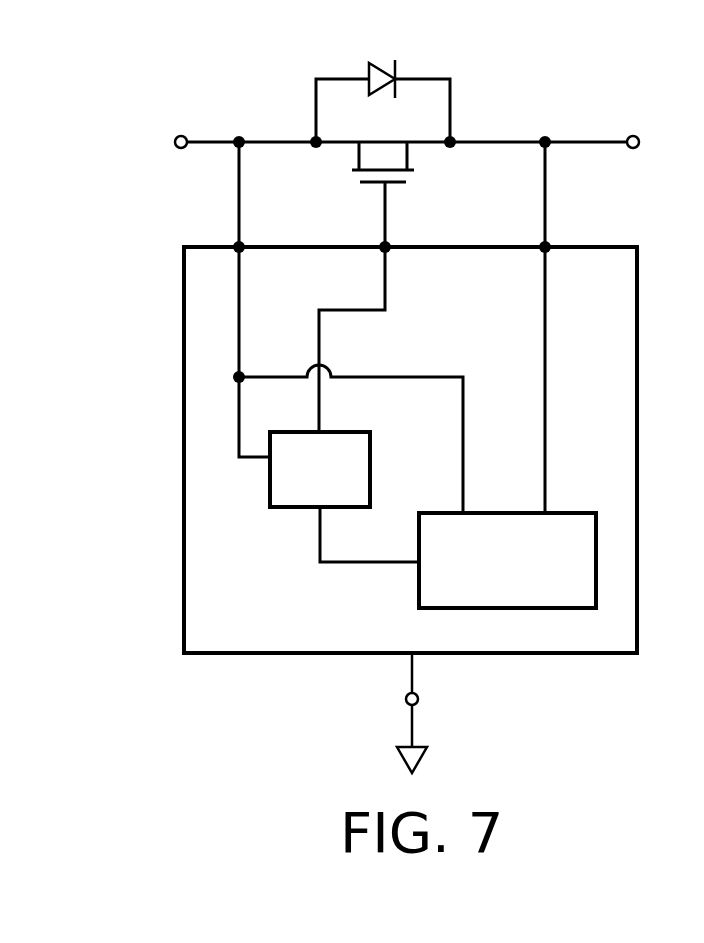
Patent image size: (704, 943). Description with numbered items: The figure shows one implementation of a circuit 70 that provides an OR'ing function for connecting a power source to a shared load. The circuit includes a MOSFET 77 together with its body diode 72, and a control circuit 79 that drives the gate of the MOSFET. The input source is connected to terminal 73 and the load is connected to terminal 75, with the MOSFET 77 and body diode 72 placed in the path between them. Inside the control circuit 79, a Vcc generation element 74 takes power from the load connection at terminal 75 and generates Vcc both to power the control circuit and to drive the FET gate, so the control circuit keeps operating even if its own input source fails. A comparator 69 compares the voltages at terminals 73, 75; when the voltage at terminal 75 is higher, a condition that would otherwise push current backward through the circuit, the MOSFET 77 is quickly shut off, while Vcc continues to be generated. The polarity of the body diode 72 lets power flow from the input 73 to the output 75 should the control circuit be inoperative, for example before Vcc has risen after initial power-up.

The comparator 69 is at (419, 587).
The circuit 70 is at (134, 342).
The body diode 72 is at (368, 75).
The terminal 73 is at (184, 133).
The Vcc generation element 74 is at (283, 510).
The terminal 75 is at (639, 132).
The MOSFET 77 is at (397, 185).
The control circuit 79 is at (638, 376).